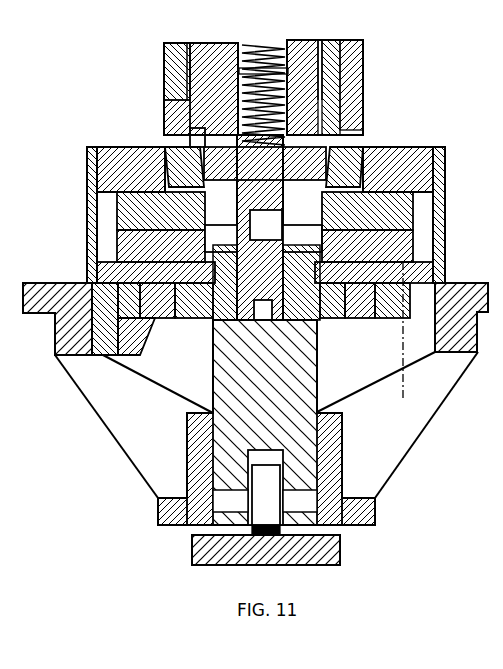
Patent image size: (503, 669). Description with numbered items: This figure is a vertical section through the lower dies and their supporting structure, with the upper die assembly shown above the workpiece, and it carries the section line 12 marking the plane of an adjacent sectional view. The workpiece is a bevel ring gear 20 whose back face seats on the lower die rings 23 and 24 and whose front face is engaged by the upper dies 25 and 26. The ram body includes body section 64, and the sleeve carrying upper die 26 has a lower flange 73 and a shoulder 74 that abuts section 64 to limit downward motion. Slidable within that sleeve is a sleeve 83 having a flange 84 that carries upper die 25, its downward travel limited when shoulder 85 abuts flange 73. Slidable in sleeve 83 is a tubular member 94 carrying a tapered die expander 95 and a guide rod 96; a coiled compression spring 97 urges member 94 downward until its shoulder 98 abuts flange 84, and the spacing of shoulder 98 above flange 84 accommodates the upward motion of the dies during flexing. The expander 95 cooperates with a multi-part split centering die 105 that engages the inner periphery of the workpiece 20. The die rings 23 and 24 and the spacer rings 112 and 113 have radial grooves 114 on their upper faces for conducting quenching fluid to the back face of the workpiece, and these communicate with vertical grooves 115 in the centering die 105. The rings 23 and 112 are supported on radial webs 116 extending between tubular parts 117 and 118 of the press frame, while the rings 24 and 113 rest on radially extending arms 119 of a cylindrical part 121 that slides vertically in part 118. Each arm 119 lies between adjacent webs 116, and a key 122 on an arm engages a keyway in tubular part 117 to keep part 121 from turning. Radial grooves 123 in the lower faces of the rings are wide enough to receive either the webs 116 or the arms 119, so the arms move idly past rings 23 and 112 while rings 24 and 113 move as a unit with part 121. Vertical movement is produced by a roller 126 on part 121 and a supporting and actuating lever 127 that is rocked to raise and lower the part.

The coiled compression spring 97 is at (262, 44).
The shoulder 74 is at (186, 100).
The body section 64 is at (184, 116).
The sleeve 83 is at (196, 135).
The shoulder 85 is at (318, 130).
The flange 84 is at (97, 151).
The shoulder 98 is at (340, 165).
The lower flange 73 is at (350, 150).
The tubular member 94 is at (265, 227).
The upper die 25 is at (140, 200).
The split centering die 105 is at (130, 232).
The bevel ring gear 20 is at (125, 268).
The vertical grooves 115 is at (218, 238).
The tapered die expander 95 is at (305, 238).
The guide rod 96 is at (266, 282).
The radial grooves 114 is at (374, 256).
The upper die 26 is at (410, 210).
The lower die ring 23 is at (462, 285).
The section line 12 is at (380, 264).
The spacer ring 112 is at (147, 318).
The spacer ring 113 is at (165, 318).
The radial grooves 123 is at (190, 318).
The lower die ring 24 is at (335, 318).
The key 122 is at (100, 365).
The tubular part 117 is at (65, 340).
The radial webs 116 is at (108, 418).
The radially extending arms 119 is at (192, 390).
The cylindrical part 121 is at (300, 358).
The tubular part 118 is at (330, 450).
The roller 126 is at (258, 482).
The supporting and actuating lever 127 is at (330, 548).